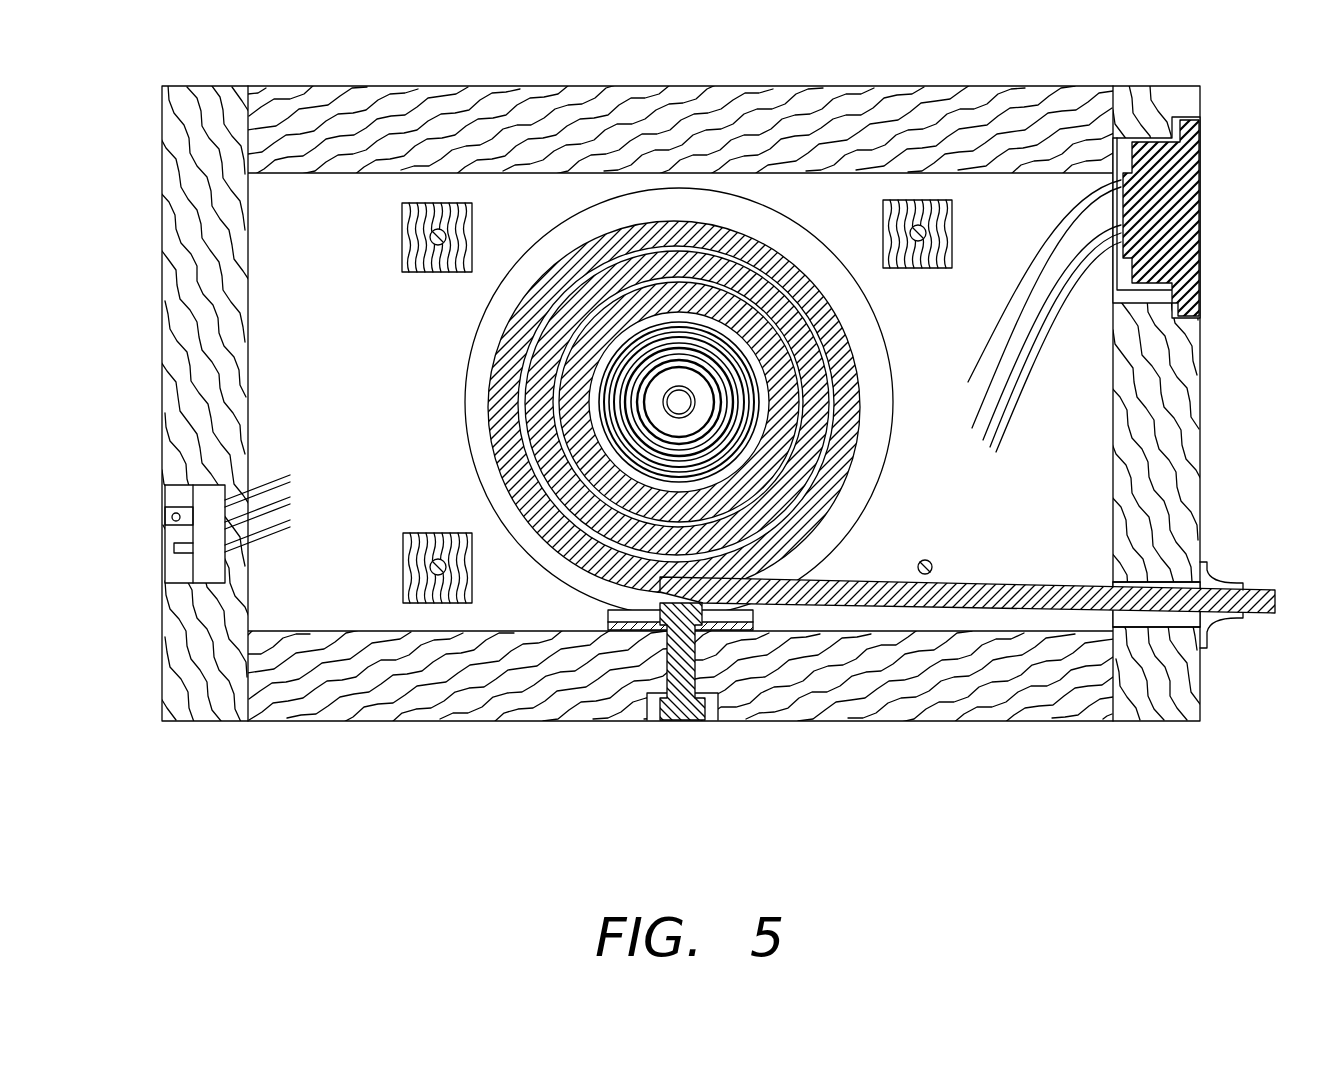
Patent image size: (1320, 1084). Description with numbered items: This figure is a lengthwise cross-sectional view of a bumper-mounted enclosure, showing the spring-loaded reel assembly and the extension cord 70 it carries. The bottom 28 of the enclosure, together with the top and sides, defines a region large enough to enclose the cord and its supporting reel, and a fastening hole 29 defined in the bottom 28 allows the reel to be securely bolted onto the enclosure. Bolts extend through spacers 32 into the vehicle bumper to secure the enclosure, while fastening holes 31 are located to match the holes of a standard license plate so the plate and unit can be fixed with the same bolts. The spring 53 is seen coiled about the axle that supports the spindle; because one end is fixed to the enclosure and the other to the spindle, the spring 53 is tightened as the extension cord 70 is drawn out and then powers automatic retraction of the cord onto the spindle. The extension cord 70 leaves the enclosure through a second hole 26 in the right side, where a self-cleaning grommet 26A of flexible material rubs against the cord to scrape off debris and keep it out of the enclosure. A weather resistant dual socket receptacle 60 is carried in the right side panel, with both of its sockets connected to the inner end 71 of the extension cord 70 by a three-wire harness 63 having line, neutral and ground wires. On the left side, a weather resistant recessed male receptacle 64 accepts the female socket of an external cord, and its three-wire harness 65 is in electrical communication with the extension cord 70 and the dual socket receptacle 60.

The second hole 26 is at (1133, 618).
The self-cleaning grommet 26A is at (1232, 637).
The bottom 28 is at (978, 721).
The fastening hole 29 is at (660, 612).
The fastening holes 31 is at (430, 226).
The spacers 32 is at (402, 262).
The spring 53 is at (723, 441).
The dual socket receptacle 60 is at (1208, 235).
The three-wire harness 63 is at (1063, 362).
The recessed male receptacle 64 is at (205, 507).
The three-wire harness 65 is at (265, 553).
The extension cord 70 is at (488, 452).
The inner end 71 is at (598, 367).